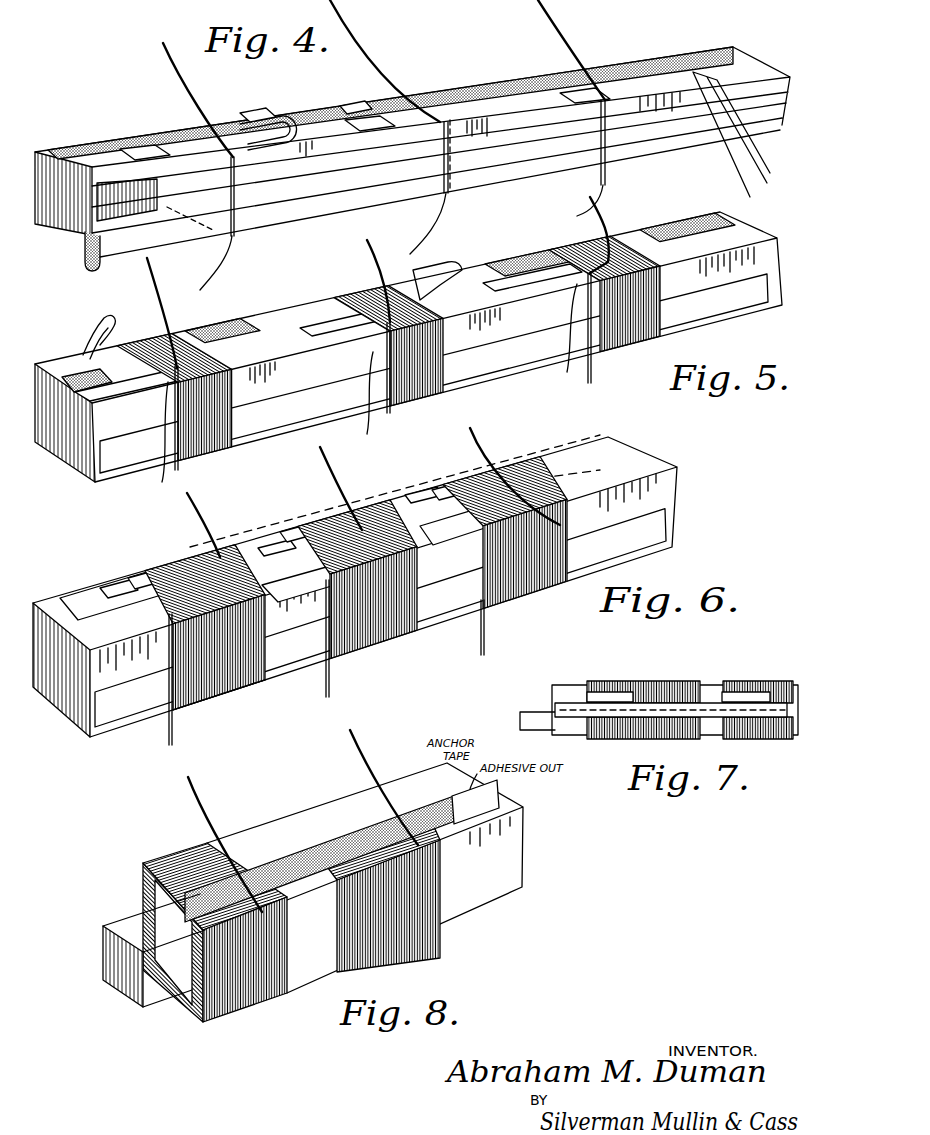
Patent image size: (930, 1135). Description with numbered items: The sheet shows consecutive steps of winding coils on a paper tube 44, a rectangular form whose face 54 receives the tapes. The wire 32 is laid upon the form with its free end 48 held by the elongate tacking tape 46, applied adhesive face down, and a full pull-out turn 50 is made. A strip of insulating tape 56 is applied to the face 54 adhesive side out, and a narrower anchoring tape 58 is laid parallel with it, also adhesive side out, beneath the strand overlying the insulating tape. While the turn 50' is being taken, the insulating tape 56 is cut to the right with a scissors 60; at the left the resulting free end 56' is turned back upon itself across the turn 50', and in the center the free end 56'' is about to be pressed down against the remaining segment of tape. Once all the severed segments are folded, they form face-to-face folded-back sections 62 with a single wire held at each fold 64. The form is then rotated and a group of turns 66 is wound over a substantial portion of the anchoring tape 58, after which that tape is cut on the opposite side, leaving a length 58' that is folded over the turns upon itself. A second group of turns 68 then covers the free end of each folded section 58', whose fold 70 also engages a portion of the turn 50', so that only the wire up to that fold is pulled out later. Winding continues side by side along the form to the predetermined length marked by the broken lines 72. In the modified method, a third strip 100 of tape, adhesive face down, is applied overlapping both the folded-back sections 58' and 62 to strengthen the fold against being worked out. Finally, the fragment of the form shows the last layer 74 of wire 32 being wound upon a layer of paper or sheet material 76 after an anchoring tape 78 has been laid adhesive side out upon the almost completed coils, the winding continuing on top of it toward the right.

In FIG. 4, the wire 32 is at (160, 48).
In FIG. 5, the wire 32 is at (158, 297).
In FIG. 6, the wire 32 is at (190, 519).
In FIG. 8, the wire 32 is at (192, 800).
In FIG. 4, the paper tube 44 is at (72, 240).
In FIG. 5, the paper tube 44 is at (76, 462).
In FIG. 6, the paper tube 44 is at (80, 707).
In FIG. 8, the paper tube 44 is at (130, 993).
In FIG. 4, the tacking tape 46 is at (358, 192).
In FIG. 5, the tacking tape 46 is at (710, 305).
In FIG. 4, the free end of wire 48 is at (205, 280).
In FIG. 5, the free end of wire 48 is at (179, 466).
In FIG. 4, the pull-out turn 50 is at (357, 104).
In FIG. 4, the turn 50' is at (416, 183).
In FIG. 4, the face of form 54 is at (530, 146).
In FIG. 5, the face of form 54 is at (278, 353).
In FIG. 6, the face of form 54 is at (632, 468).
In FIG. 4, the insulating tape 56 is at (430, 92).
In FIG. 4, the free end of insulating tape 56' is at (254, 97).
In FIG. 4, the free end of insulating tape 56'' is at (330, 99).
In FIG. 4, the anchoring tape 58 is at (390, 103).
In FIG. 5, the anchoring tape 58 is at (398, 291).
In FIG. 5, the folded section of anchoring tape 58' is at (254, 297).
In FIG. 6, the folded section of anchoring tape 58' is at (302, 516).
In FIG. 7, the folded section of anchoring tape 58' is at (678, 676).
In FIG. 4, the scissors 60 is at (760, 143).
In FIG. 5, the folded-back section 62 is at (133, 384).
In FIG. 6, the folded-back section 62 is at (100, 627).
In FIG. 7, the folded-back section 62 is at (713, 725).
In FIG. 4, the fold 64 is at (428, 100).
In FIG. 5, the fold 64 is at (362, 392).
In FIG. 6, the fold 64 is at (167, 742).
In FIG. 5, the group of turns 66 is at (224, 430).
In FIG. 6, the group of turns 66 is at (180, 713).
In FIG. 6, the second group of turns 68 is at (268, 688).
In FIG. 6, the fold 70 is at (117, 586).
In FIG. 7, the fold 70 is at (583, 692).
In FIG. 6, the broken lines 72 is at (594, 578).
In FIG. 8, the last layer of wire 74 is at (427, 930).
In FIG. 8, the layer of paper or sheet material 76 is at (480, 897).
In FIG. 8, the anchoring tape 78 is at (360, 840).
In FIG. 7, the third strip of tape 100 is at (668, 705).